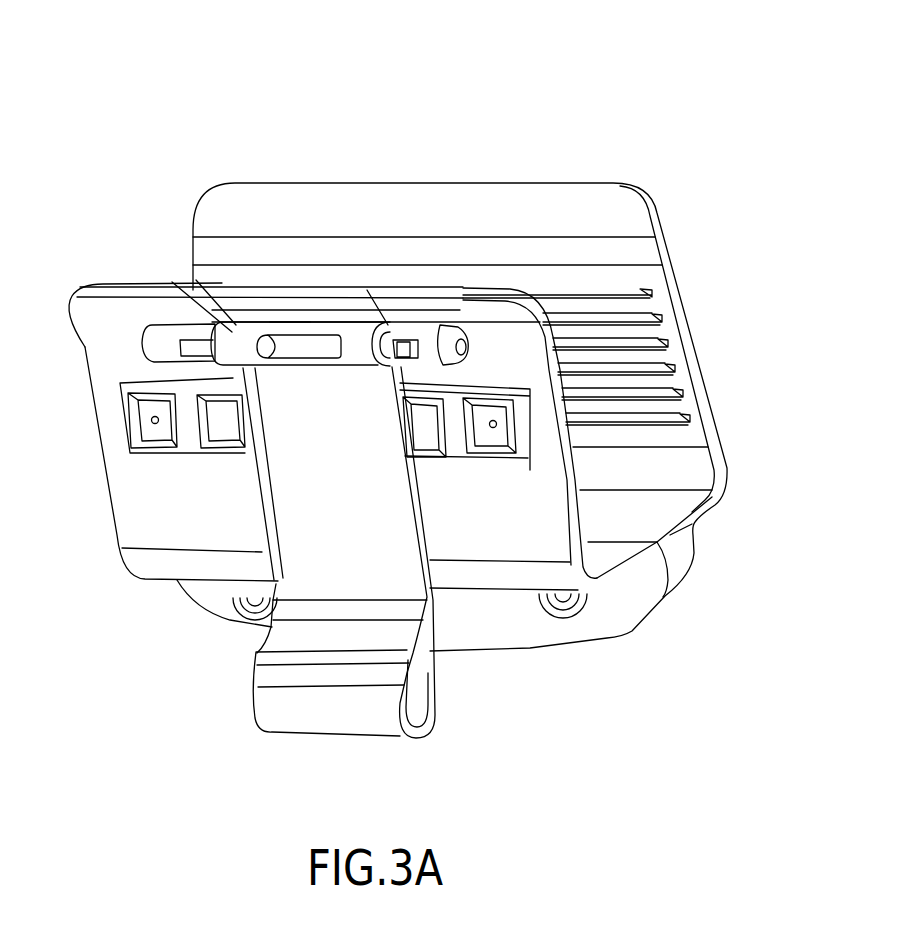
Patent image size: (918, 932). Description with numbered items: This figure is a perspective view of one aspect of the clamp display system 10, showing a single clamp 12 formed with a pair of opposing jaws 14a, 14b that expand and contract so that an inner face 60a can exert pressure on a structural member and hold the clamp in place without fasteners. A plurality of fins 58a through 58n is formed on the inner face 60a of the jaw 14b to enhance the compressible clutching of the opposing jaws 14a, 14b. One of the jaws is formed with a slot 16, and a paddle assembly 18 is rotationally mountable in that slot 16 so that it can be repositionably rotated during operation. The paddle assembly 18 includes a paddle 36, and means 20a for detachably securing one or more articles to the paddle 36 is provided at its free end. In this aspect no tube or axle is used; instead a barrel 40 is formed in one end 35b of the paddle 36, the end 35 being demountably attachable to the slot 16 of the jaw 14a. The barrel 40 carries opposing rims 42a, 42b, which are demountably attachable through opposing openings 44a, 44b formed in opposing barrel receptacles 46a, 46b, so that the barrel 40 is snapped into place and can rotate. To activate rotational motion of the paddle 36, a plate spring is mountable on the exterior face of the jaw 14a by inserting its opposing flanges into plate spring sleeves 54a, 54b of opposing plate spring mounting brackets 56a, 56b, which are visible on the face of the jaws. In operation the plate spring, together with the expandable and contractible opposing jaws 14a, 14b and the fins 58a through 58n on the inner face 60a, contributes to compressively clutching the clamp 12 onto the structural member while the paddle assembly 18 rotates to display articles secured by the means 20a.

The clamp display system 10 is at (216, 80).
The clamp 12 is at (653, 632).
The opposing jaw 14a is at (112, 530).
The opposing jaw 14b is at (618, 184).
The slot 16 is at (434, 600).
The paddle assembly 18 is at (235, 683).
The means for detachably securing articles 20a is at (287, 731).
The end of the paddle 35 is at (262, 370).
The end of the paddle 35b is at (289, 316).
The paddle 36 is at (270, 630).
The barrel 40 is at (357, 356).
The rim 42a is at (236, 336).
The rim 42b is at (388, 328).
The opening 44a is at (182, 352).
The opening 44b is at (415, 362).
The barrel receptacle 46a is at (143, 335).
The barrel receptacle 46b is at (446, 328).
The plate spring sleeve 54a is at (424, 456).
The plate spring sleeve 54b is at (230, 451).
The plate spring mounting bracket 56a is at (524, 454).
The plate spring mounting bracket 56b is at (150, 454).
The fin 58a is at (668, 301).
The fin 58n is at (700, 426).
The inner face 60a is at (688, 478).